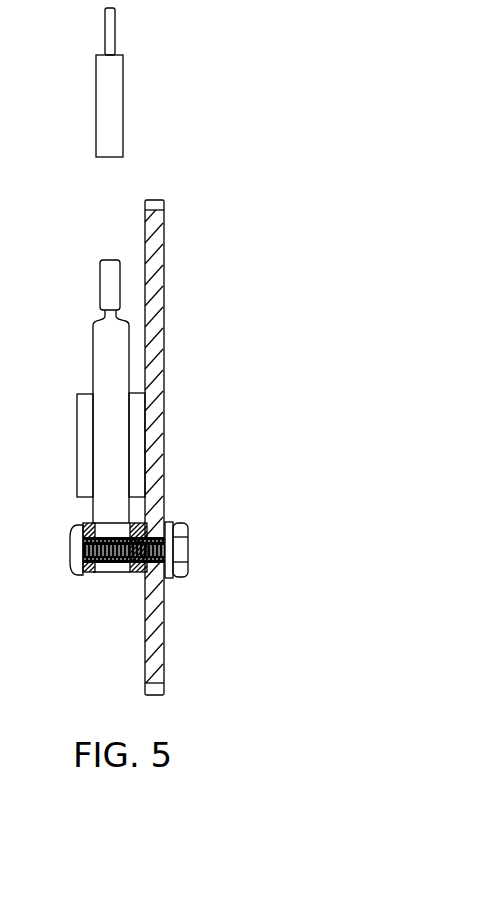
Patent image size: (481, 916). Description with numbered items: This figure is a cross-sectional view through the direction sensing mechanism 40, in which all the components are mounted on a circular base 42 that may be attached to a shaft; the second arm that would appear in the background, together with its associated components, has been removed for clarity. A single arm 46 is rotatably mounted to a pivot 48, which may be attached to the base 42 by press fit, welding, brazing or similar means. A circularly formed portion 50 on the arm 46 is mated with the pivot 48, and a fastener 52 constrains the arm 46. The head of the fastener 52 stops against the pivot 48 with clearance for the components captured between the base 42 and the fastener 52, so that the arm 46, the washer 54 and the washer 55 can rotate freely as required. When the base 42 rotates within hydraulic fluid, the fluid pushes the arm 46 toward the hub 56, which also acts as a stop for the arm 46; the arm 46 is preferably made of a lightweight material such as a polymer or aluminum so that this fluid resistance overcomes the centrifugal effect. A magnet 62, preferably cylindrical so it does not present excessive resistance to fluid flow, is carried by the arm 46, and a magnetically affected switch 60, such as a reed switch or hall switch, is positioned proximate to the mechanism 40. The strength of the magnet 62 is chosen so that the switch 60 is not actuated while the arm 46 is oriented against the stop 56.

The direction sensing mechanism 40 is at (193, 167).
The circular base 42 is at (148, 658).
The arm 46 is at (93, 357).
The pivot 48 is at (110, 533).
The circularly formed portion 50 is at (112, 568).
The fastener 52 is at (69, 558).
The washer 54 is at (90, 573).
The washer 55 is at (140, 573).
The hub 56 is at (77, 412).
The switch 60 is at (95, 107).
The magnet 62 is at (100, 287).